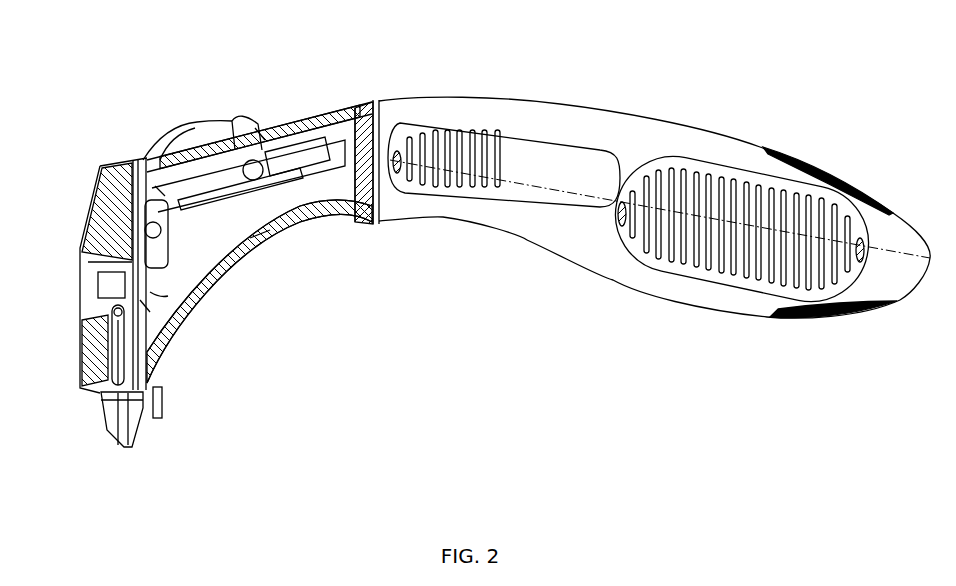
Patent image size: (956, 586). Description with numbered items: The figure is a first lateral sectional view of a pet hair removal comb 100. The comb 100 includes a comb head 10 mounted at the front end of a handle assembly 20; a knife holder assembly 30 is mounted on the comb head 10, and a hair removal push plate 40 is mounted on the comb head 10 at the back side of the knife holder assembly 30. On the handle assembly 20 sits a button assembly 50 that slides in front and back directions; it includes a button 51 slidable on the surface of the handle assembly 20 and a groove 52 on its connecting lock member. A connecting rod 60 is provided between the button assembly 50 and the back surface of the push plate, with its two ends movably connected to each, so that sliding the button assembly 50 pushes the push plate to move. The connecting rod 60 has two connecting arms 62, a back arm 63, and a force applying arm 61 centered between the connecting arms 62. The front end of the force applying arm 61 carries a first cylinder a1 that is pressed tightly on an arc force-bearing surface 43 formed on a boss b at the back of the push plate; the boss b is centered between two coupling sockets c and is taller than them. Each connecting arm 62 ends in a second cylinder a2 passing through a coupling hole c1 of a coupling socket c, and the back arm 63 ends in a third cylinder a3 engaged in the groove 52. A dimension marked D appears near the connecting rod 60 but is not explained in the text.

The comb head 10 is at (93, 170).
The handle assembly 20 is at (660, 119).
The knife holder assembly 30 is at (130, 452).
The hair removal push plate 40 is at (100, 384).
The arc force-bearing surface 43 is at (83, 254).
The button assembly 50 is at (333, 177).
The button 51 is at (222, 133).
The groove 52 is at (363, 230).
The connecting rod 60 is at (190, 212).
The force applying arm 61 is at (166, 140).
The connecting arm 62 is at (208, 220).
The back arm 63 is at (243, 165).
The pet hair removal comb 100 is at (473, 423).
The first cylinder a1 is at (160, 192).
The second cylinder a2 is at (97, 300).
The third cylinder a3 is at (257, 130).
The boss b is at (160, 262).
The coupling socket c is at (163, 297).
The coupling hole c1 is at (148, 310).
The gap D is at (263, 257).